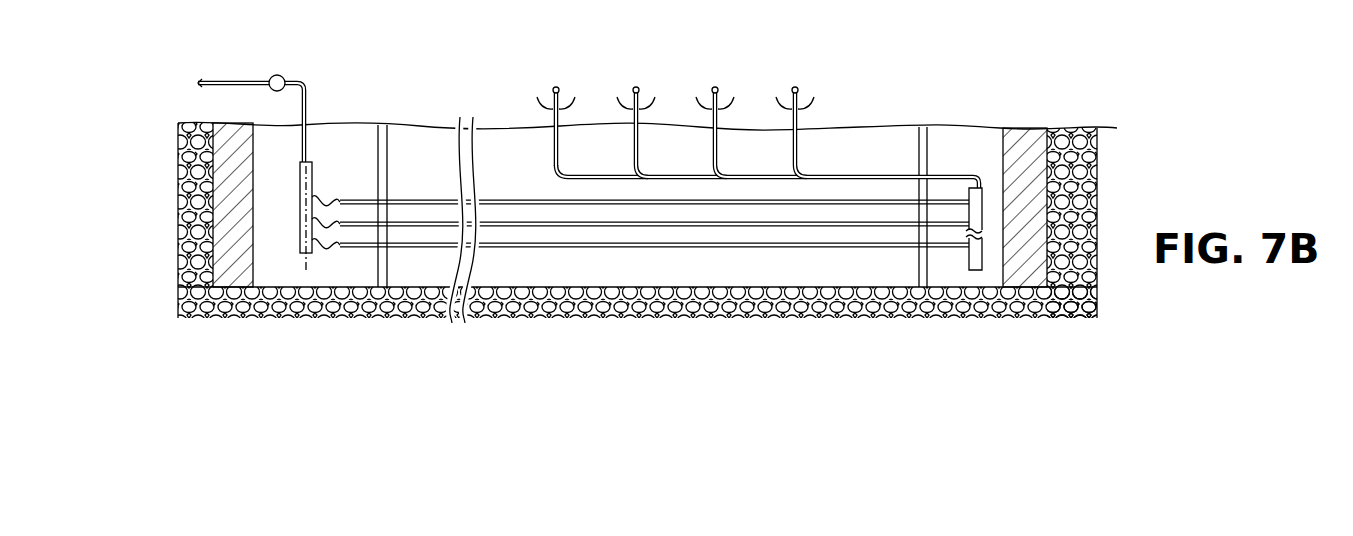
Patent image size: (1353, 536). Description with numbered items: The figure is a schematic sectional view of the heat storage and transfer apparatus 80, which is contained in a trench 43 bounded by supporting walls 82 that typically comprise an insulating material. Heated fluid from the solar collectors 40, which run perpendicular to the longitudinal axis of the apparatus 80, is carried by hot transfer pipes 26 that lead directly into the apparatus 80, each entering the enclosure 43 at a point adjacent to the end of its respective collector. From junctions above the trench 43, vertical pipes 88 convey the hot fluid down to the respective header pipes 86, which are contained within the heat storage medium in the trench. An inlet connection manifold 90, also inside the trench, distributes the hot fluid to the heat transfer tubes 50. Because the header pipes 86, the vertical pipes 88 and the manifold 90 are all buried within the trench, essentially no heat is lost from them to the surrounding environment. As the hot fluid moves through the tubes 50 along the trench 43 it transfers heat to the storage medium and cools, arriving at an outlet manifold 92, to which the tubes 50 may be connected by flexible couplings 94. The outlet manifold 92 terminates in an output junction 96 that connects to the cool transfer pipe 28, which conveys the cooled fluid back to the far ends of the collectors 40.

The hot transfer pipes 26 is at (662, 72).
The cool transfer pipe 28 is at (261, 100).
The solar collectors 40 is at (540, 103).
The trench 43 is at (950, 148).
The heat transfer tubes 50 is at (492, 246).
The heat storage and transfer apparatus 80 is at (678, 173).
The supporting walls 82 is at (1047, 200).
The header pipes 86 is at (855, 177).
The vertical pipes 88 is at (633, 146).
The inlet connection manifold 90 is at (983, 204).
The outlet manifold 92 is at (313, 164).
The hoses 94 is at (326, 243).
The output junction 96 is at (284, 76).